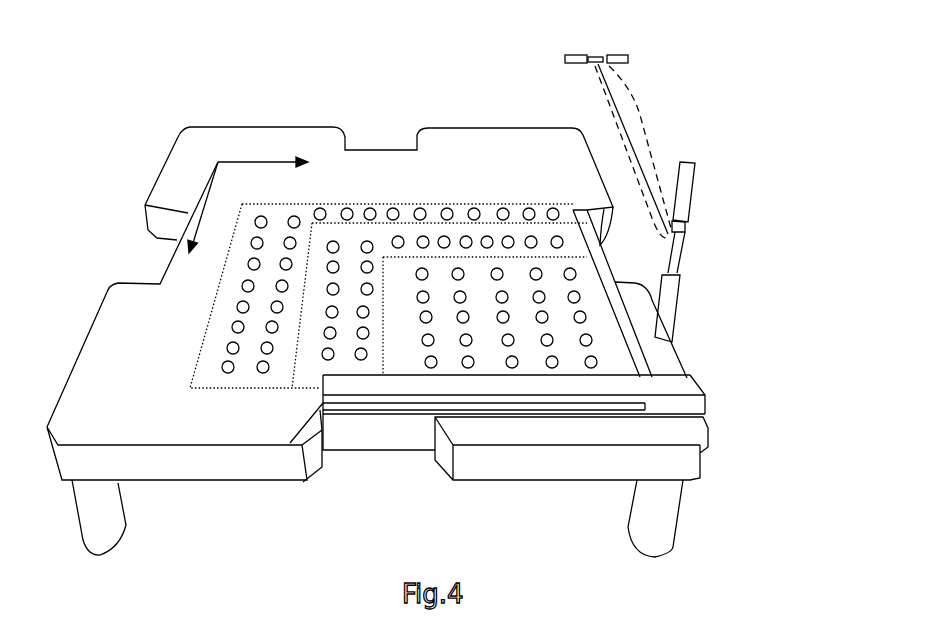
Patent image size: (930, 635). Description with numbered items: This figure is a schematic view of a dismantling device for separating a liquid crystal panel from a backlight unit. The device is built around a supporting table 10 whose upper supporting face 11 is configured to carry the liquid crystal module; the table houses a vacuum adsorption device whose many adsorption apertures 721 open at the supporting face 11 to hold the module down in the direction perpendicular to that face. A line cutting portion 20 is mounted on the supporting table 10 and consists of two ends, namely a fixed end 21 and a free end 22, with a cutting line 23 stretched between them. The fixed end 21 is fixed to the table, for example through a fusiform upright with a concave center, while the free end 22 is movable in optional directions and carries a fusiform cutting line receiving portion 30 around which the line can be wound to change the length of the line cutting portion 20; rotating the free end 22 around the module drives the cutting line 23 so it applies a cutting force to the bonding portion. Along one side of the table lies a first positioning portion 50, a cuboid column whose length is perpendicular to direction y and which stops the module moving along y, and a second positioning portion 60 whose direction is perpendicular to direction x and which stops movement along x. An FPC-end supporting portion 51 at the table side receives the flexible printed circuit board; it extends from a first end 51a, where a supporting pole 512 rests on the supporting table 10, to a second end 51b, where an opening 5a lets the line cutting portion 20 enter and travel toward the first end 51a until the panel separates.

The supporting table 10 is at (163, 168).
The supporting face 11 is at (190, 140).
The adsorption apertures 721 is at (222, 365).
The cutting line receiving portion 30 is at (580, 58).
The free end 22 is at (598, 60).
The line cutting portion 20 is at (633, 102).
The cutting line 23 is at (627, 125).
The fixed end 21 is at (672, 232).
The second positioning portion 60 is at (620, 323).
The first positioning portion 50 is at (685, 382).
The FPC-end supporting portion 51 is at (345, 398).
The first end 51a is at (705, 411).
The second end 51b is at (320, 400).
The opening 5a is at (575, 407).
The supporting pole 512 is at (660, 405).